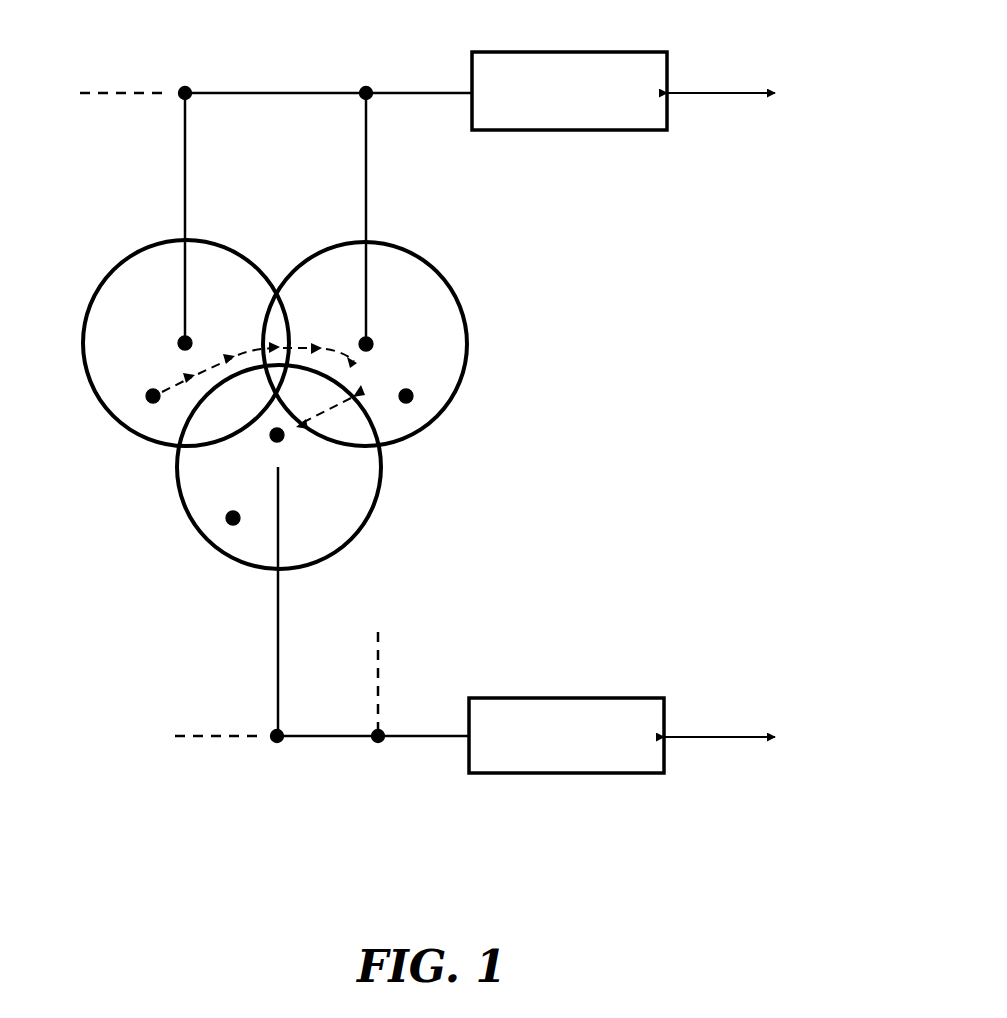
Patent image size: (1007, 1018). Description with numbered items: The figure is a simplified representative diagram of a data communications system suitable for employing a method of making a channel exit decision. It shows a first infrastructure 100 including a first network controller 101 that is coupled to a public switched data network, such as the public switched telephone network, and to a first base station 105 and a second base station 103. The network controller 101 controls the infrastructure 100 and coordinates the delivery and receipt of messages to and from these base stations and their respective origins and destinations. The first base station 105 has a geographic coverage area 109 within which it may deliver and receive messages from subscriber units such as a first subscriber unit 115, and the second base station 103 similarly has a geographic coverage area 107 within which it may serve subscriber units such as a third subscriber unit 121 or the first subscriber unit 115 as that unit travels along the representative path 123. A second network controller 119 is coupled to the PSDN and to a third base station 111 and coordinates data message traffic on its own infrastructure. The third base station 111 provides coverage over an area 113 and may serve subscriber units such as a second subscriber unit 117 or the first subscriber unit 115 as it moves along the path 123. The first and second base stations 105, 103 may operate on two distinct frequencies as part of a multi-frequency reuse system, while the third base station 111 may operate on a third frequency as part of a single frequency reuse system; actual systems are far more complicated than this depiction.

The first infrastructure 100 is at (364, 72).
The first network controller 101 is at (572, 52).
The base station B2 103 is at (400, 307).
The base station B1 105 is at (145, 306).
The geographic coverage area 107 is at (405, 244).
The geographic coverage area 109 is at (215, 244).
The base station B3 111 is at (330, 453).
The coverage area 113 is at (378, 509).
The subscriber unit S1 115 is at (123, 370).
The subscriber unit S2 117 is at (197, 492).
The network controller 119 is at (572, 698).
The subscriber unit S3 121 is at (447, 371).
The representative path 123 is at (358, 392).